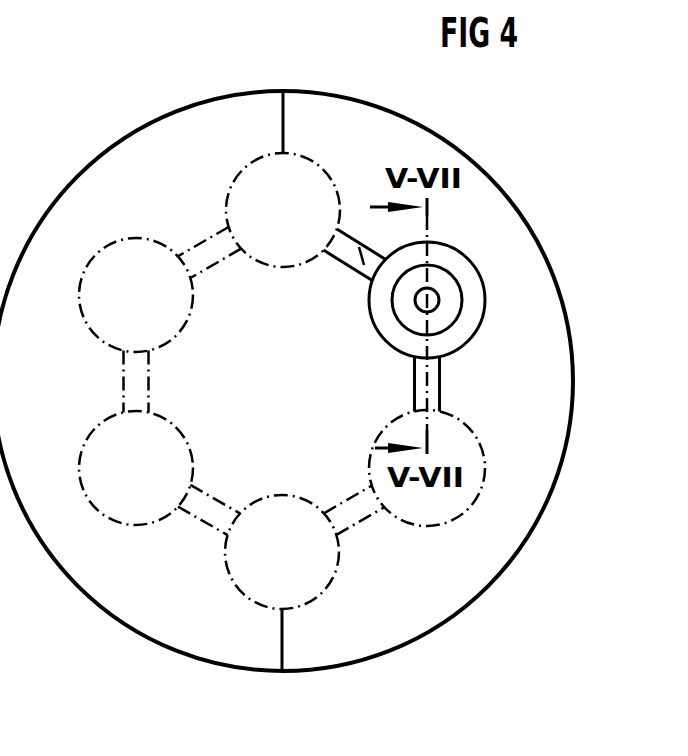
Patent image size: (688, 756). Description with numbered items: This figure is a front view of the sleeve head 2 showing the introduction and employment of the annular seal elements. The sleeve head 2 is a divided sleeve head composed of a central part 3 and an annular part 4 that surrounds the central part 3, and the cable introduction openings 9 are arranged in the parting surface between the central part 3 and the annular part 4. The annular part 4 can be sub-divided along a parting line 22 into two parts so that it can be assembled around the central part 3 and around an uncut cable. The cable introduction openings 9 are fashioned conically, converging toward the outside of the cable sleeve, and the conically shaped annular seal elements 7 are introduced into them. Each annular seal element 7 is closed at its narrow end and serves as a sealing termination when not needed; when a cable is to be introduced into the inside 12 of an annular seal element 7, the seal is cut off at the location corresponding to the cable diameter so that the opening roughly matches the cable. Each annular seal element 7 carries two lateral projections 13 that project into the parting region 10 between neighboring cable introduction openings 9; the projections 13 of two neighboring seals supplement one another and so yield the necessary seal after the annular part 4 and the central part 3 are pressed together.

The sleeve head 2 is at (286, 381).
The annular part 4 is at (90, 181).
The parting line 22 is at (280, 127).
The cable introduction openings 9 is at (283, 245).
The central part 3 is at (178, 384).
The parting region 10 is at (337, 257).
The annular seal element 7 is at (454, 300).
The inside of annular seal element 12 is at (432, 300).
The lateral projections 13 is at (414, 367).